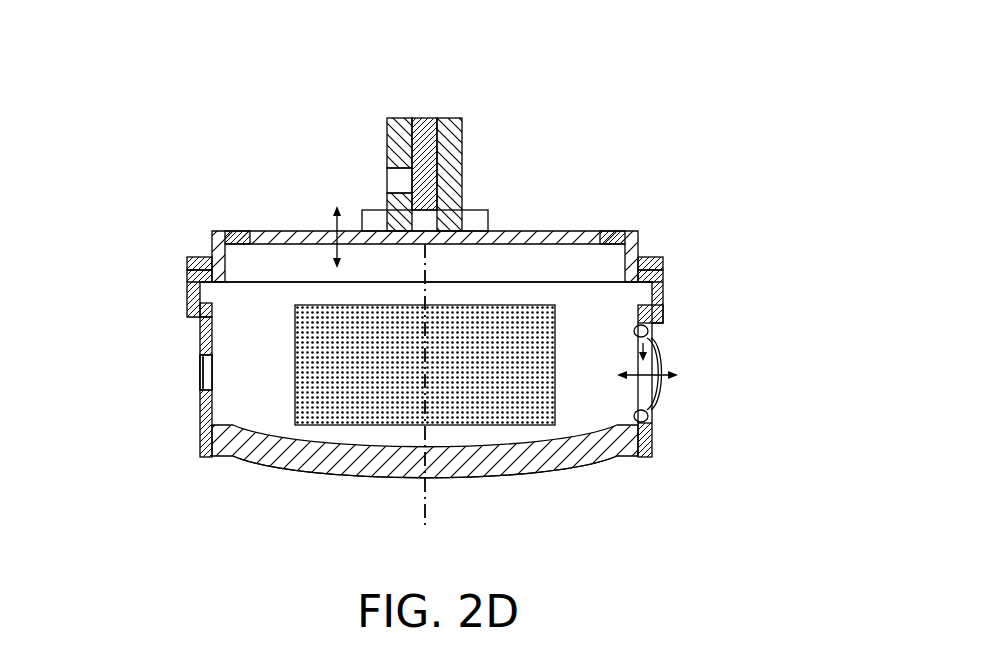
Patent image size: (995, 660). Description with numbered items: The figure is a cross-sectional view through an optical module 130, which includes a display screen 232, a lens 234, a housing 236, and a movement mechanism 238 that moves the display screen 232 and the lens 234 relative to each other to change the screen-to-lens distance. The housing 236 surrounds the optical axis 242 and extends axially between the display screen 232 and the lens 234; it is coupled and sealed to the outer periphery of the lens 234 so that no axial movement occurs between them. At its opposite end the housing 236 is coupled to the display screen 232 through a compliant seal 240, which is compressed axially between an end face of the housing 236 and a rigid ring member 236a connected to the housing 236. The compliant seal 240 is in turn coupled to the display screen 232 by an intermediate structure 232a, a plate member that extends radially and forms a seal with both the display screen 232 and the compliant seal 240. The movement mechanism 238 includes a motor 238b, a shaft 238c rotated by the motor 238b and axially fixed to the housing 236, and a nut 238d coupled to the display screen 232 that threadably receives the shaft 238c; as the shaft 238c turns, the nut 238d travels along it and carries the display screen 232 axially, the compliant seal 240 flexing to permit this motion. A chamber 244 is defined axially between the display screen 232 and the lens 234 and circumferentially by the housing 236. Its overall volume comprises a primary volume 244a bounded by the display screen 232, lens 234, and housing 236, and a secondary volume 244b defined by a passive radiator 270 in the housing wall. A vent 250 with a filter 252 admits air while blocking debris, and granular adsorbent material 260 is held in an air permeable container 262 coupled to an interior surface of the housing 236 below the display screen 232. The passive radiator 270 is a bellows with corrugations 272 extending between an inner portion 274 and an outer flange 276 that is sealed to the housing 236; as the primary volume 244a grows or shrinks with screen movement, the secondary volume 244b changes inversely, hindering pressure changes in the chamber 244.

The optical module 130 is at (536, 84).
The display screen 232 is at (297, 230).
The intermediate structure 232a is at (230, 230).
The lens 234 is at (263, 463).
The housing 236 is at (198, 342).
The rigid ring member 236a is at (188, 257).
The movement mechanism 238 is at (484, 130).
The motor 238b is at (462, 140).
The shaft 238c is at (462, 178).
The nut 238d is at (465, 200).
The compliant seal 240 is at (187, 275).
The optical axis 242 is at (425, 495).
The chamber 244 is at (729, 277).
The primary volume 244a is at (626, 298).
The secondary volume 244b is at (663, 320).
The vent 250 is at (200, 387).
The filter 252 is at (212, 383).
The adsorbent material 260 is at (552, 286).
The container 262 is at (295, 316).
The passive radiator 270 is at (702, 387).
The corrugations 272 is at (652, 417).
The inner portion 274 is at (653, 362).
The outer flange 276 is at (652, 423).